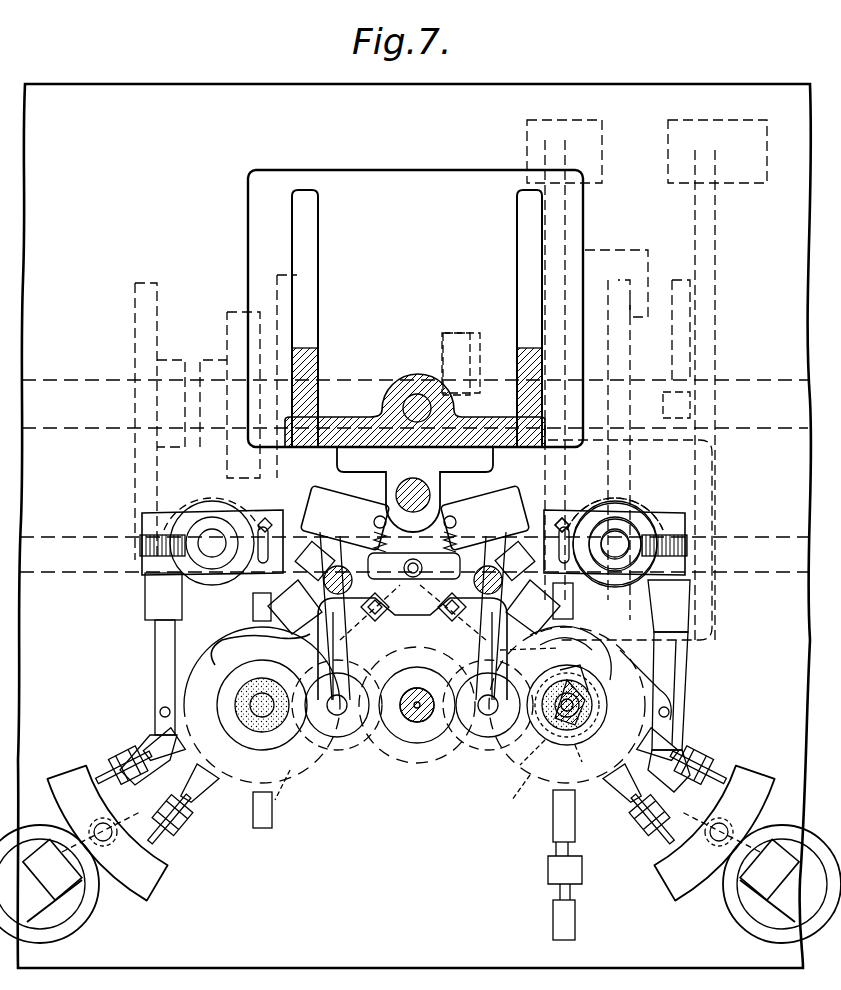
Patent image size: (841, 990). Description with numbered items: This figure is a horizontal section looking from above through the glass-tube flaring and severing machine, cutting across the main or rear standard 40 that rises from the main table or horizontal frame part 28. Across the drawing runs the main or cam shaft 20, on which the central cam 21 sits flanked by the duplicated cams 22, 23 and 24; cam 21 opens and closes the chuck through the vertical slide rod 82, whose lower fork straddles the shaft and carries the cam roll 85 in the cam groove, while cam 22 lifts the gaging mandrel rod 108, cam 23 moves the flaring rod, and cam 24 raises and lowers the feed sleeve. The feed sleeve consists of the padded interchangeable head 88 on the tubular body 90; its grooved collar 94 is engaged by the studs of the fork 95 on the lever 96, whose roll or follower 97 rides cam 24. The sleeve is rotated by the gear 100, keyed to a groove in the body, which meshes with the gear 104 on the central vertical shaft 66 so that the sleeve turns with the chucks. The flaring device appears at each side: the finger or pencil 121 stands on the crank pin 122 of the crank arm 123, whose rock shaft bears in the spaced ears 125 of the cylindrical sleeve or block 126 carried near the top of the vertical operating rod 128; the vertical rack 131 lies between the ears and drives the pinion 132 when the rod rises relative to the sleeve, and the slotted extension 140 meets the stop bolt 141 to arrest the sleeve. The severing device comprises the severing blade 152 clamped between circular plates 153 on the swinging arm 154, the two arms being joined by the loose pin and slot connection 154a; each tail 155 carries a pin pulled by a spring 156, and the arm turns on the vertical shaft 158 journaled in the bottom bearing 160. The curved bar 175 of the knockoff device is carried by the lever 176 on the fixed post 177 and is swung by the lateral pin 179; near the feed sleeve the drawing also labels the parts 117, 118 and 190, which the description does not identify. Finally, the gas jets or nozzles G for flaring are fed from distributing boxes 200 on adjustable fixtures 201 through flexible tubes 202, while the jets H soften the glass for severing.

The main or cam shaft 20 is at (104, 380).
The cam 21 is at (470, 320).
The cam 22 is at (540, 280).
The cam 23 is at (596, 300).
The cam 24 is at (696, 328).
The main table or horizontal frame part 28 is at (320, 922).
The main or rear standard 40 is at (415, 308).
The central vertical shaft 66 is at (400, 720).
The vertical slide rod 82 is at (403, 408).
The cam roll 85 is at (483, 358).
The interchangeable head 88 is at (250, 695).
The tubular body 90 is at (612, 738).
The grooved collar 94 is at (590, 700).
The fork 95 is at (600, 708).
The lever 96 is at (712, 508).
The roll or follower 97 is at (704, 402).
The gear 100 is at (512, 791).
The gear 104 is at (395, 780).
The vertical cylindrical rod 108 is at (582, 757).
The pawl 117 is at (590, 680).
The ratchet 118 is at (596, 712).
The finger or pencil 121 is at (672, 712).
The crank pin 122 is at (684, 652).
The crank arm 123 is at (672, 610).
The ears 125 is at (690, 532).
The cylindrical sleeve or block 126 is at (606, 505).
The vertical operating rod 128 is at (618, 540).
The vertical rack 131 is at (655, 515).
The pinion 132 is at (692, 548).
The slotted extension 140 is at (560, 515).
The stop bolt 141 is at (548, 512).
The severing blade 152 is at (440, 730).
The circular plates 153 is at (492, 740).
The swinging arm 154 is at (470, 628).
The loose pin and slot connection 154a is at (415, 513).
The tail 155 is at (392, 515).
The spring 156 is at (372, 530).
The vertical shaft 158 is at (462, 535).
The bottom bearing 160 is at (610, 490).
The curved bar 175 is at (600, 640).
The lever 176 is at (540, 654).
The fixed post 177 is at (445, 672).
The lateral pin 179 is at (538, 755).
The lever 190 is at (650, 700).
The distributing box 200 is at (160, 875).
The adjustable fixture 201 is at (70, 905).
The flexible tube 202 is at (552, 918).
The gas jets or nozzles G is at (212, 786).
The jets H is at (272, 826).